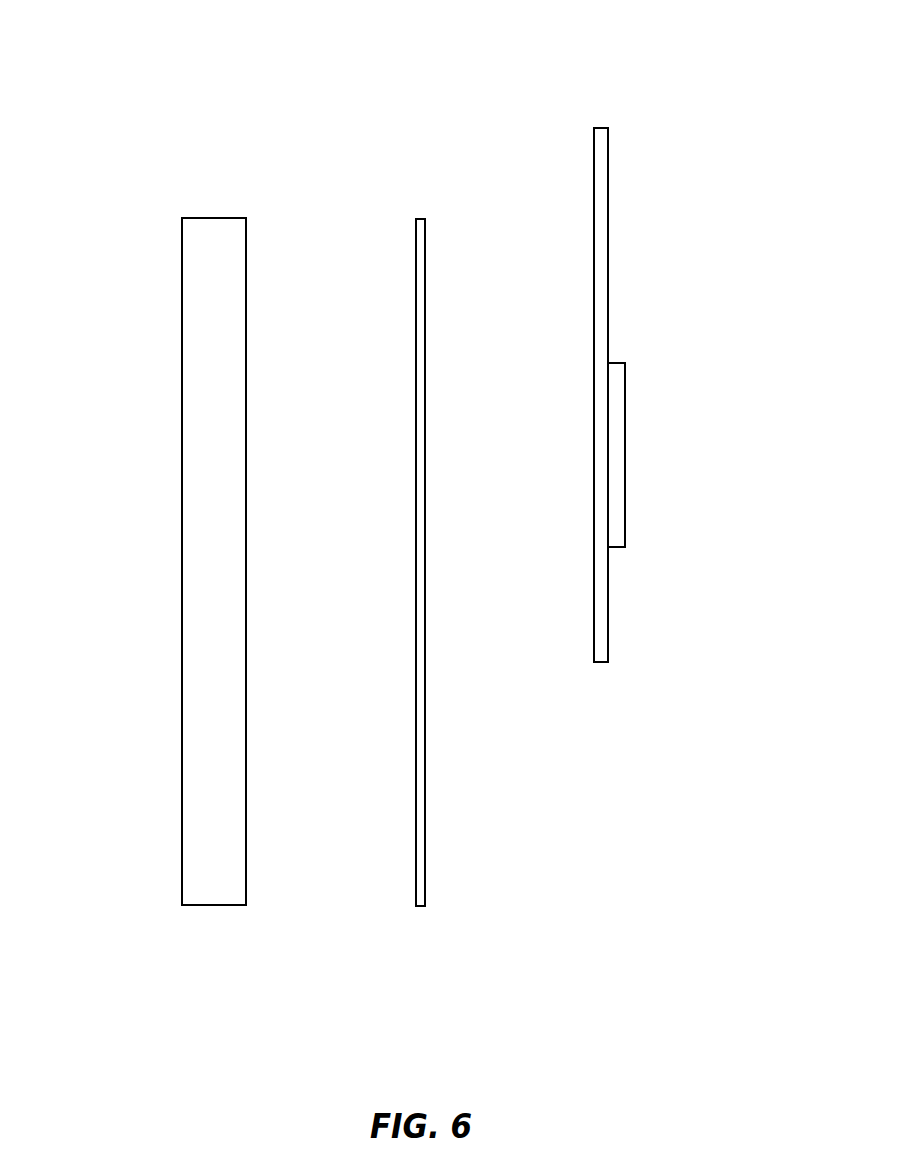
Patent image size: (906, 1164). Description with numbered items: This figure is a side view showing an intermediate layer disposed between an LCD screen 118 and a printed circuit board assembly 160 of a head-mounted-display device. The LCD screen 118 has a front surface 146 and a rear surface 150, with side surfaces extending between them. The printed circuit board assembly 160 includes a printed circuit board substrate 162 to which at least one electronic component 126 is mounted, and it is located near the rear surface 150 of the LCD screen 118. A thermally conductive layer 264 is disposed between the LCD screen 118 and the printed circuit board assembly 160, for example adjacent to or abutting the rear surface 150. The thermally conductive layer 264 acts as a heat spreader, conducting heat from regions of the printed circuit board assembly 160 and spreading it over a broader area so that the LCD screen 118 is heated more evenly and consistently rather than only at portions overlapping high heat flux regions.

The LCD screen 118 is at (150, 214).
The front surface 146 is at (182, 700).
The rear surface 150 is at (246, 754).
The thermally conductive layer 264 is at (396, 215).
The printed circuit board assembly 160 is at (640, 122).
The electronic component 126 is at (650, 431).
The printed circuit board substrate 162 is at (600, 662).